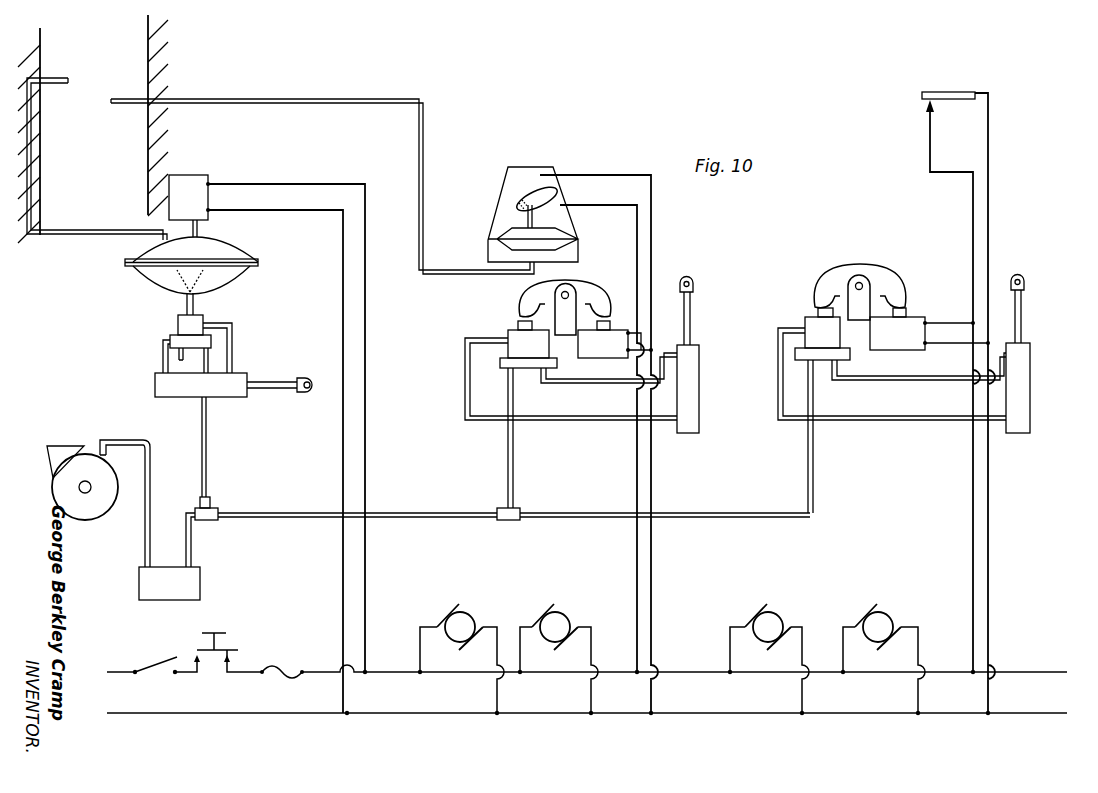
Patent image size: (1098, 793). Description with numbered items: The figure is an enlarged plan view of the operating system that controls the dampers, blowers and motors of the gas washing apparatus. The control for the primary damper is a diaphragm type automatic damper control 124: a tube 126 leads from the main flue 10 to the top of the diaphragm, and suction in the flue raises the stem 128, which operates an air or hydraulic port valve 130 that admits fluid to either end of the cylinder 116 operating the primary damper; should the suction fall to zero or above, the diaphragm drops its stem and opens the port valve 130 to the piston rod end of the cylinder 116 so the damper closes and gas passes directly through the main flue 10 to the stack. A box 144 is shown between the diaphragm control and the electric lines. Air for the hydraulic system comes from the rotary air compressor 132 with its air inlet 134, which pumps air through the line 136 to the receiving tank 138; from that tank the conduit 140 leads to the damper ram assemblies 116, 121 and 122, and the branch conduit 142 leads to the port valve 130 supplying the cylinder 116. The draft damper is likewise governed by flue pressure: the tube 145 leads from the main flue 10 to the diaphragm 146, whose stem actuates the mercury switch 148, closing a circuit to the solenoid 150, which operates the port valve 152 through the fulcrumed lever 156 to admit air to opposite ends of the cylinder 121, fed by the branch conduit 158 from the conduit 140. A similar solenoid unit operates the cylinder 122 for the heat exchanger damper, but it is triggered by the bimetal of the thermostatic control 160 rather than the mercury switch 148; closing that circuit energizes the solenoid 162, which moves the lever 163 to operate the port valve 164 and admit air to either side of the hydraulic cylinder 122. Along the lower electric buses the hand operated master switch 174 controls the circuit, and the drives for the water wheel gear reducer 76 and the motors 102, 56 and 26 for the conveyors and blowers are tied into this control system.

The main flue 10 is at (42, 50).
The tube 126 is at (58, 82).
The tube 145 is at (343, 99).
The control box 144 is at (204, 180).
The diaphragm type automatic damper control 124 is at (234, 252).
The stem 128 is at (194, 301).
The port valve 130 is at (186, 328).
The cylinder 116 is at (173, 400).
The branch conduit 142 is at (207, 457).
The conduit 140 is at (411, 512).
The compressor tank or receiving tank 138 is at (201, 585).
The line 136 is at (127, 440).
The rotary air compressor 132 is at (86, 461).
The air inlet 134 is at (53, 452).
The hand operated master switch 174 is at (146, 660).
The mercury switch 148 is at (537, 200).
The diaphragm 146 is at (511, 240).
The fulcrumed lever 156 is at (581, 292).
The port valve 152 is at (512, 336).
The solenoid 150 is at (609, 346).
The cylinder 121 is at (700, 410).
The branch conduit 158 is at (514, 480).
The lever 163 is at (881, 268).
The port valve 164 is at (813, 330).
The solenoid 162 is at (906, 318).
The cylinder 122 is at (1032, 387).
The thermostatic control 160 is at (976, 93).
The motor 26 is at (462, 616).
The motor 102 is at (557, 616).
The gear reducer 76 is at (770, 616).
The motor 56 is at (882, 616).